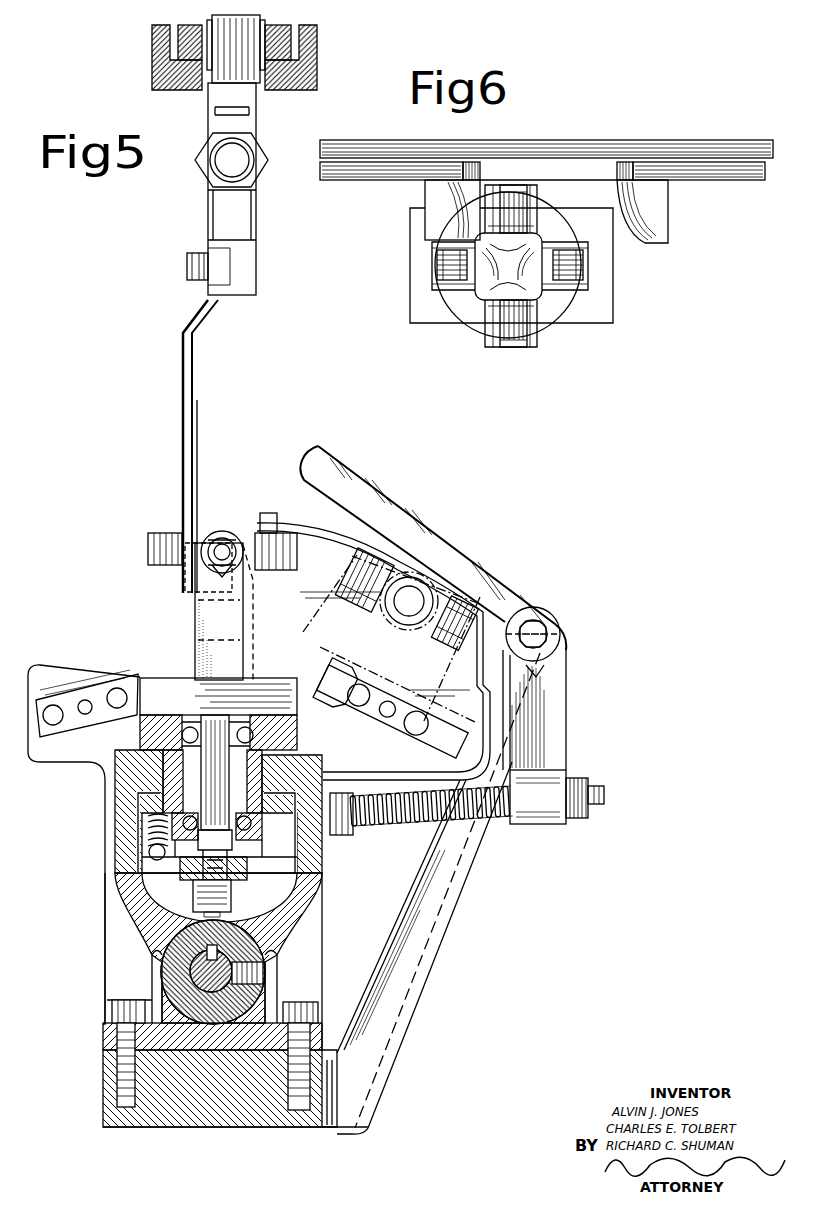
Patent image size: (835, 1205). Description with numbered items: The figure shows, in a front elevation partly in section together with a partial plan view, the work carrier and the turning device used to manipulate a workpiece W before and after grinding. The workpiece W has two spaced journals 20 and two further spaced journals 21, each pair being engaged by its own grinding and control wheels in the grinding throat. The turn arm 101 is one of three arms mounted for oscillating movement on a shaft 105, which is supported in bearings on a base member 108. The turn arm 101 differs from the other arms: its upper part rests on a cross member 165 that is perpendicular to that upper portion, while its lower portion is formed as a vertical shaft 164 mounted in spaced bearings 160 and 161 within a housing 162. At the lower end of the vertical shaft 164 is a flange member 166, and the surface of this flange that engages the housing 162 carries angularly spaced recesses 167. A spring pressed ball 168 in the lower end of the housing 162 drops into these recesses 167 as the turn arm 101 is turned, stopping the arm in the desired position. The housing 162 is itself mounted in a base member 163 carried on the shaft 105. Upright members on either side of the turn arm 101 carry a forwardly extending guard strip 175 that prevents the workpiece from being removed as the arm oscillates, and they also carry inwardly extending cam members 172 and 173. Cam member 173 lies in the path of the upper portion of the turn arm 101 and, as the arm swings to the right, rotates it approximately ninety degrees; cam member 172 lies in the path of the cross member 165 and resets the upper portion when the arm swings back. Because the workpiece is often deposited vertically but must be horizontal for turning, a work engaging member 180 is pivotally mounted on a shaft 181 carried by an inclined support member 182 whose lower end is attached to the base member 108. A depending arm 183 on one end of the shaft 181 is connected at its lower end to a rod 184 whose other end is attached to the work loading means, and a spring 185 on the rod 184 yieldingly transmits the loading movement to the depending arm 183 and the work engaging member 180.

In FIG. 6, the spaced journals 20 is at (517, 206).
In FIG. 6, the spaced journals 21 is at (453, 272).
In FIG. 6, the workpiece W is at (508, 268).
In FIG. 5, the workpiece W is at (222, 535).
In FIG. 5, the turn arm 101 is at (192, 608).
In FIG. 5, the shaft 105 is at (193, 978).
In FIG. 5, the base member 108 is at (240, 1118).
In FIG. 5, the bearing 160 is at (250, 720).
In FIG. 5, the bearing 161 is at (176, 817).
In FIG. 5, the housing 162 is at (148, 830).
In FIG. 5, the base member 163 is at (320, 907).
In FIG. 5, the vertical shaft 164 is at (207, 762).
In FIG. 5, the cross member 165 is at (196, 682).
In FIG. 5, the flange member 166 is at (244, 880).
In FIG. 5, the recesses 167 is at (167, 864).
In FIG. 5, the spring pressed ball 168 is at (138, 872).
In FIG. 5, the cam member 172 is at (143, 692).
In FIG. 5, the cam member 173 is at (313, 657).
In FIG. 5, the guard strip 175 is at (307, 532).
In FIG. 5, the work engaging member 180 is at (390, 511).
In FIG. 5, the shaft 181 is at (538, 624).
In FIG. 5, the inclined support member 182 is at (453, 897).
In FIG. 5, the depending arm 183 is at (556, 706).
In FIG. 5, the rod 184 is at (606, 784).
In FIG. 5, the spring 185 is at (501, 818).